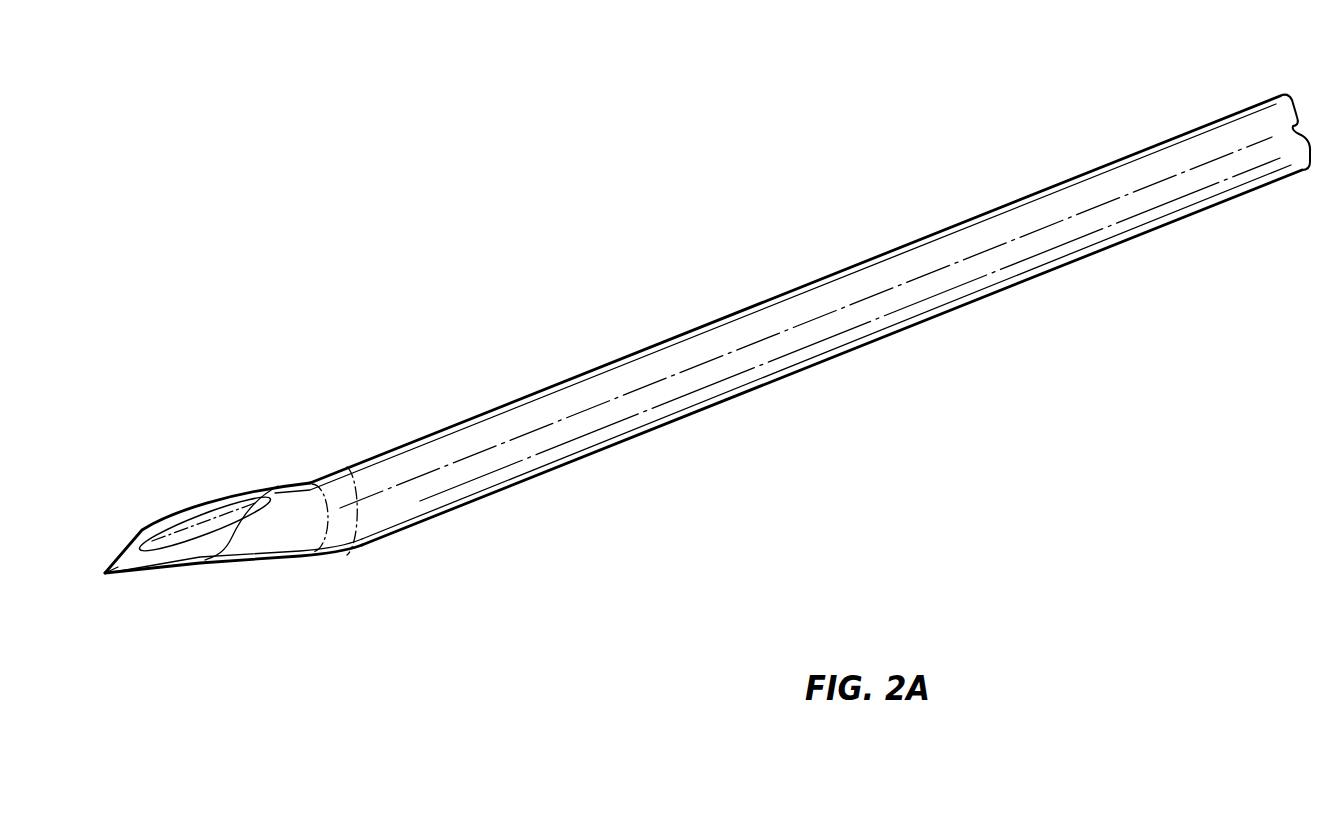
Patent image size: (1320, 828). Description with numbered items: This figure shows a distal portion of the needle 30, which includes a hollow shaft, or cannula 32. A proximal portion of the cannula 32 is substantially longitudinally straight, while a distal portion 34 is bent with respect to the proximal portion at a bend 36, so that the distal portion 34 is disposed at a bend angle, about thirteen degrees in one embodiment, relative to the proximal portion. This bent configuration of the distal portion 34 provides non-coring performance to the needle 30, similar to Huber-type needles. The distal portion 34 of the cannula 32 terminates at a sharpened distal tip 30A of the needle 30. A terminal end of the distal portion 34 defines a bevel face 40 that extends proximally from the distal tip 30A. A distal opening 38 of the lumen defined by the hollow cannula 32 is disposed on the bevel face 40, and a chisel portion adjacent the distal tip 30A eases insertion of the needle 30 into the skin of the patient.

The needle 30 is at (699, 377).
The distal tip 30A is at (105, 573).
The cannula 32 is at (932, 258).
The distal portion 34 is at (235, 471).
The bend 36 is at (347, 556).
The distal opening 38 is at (192, 520).
The bevel face 40 is at (272, 497).